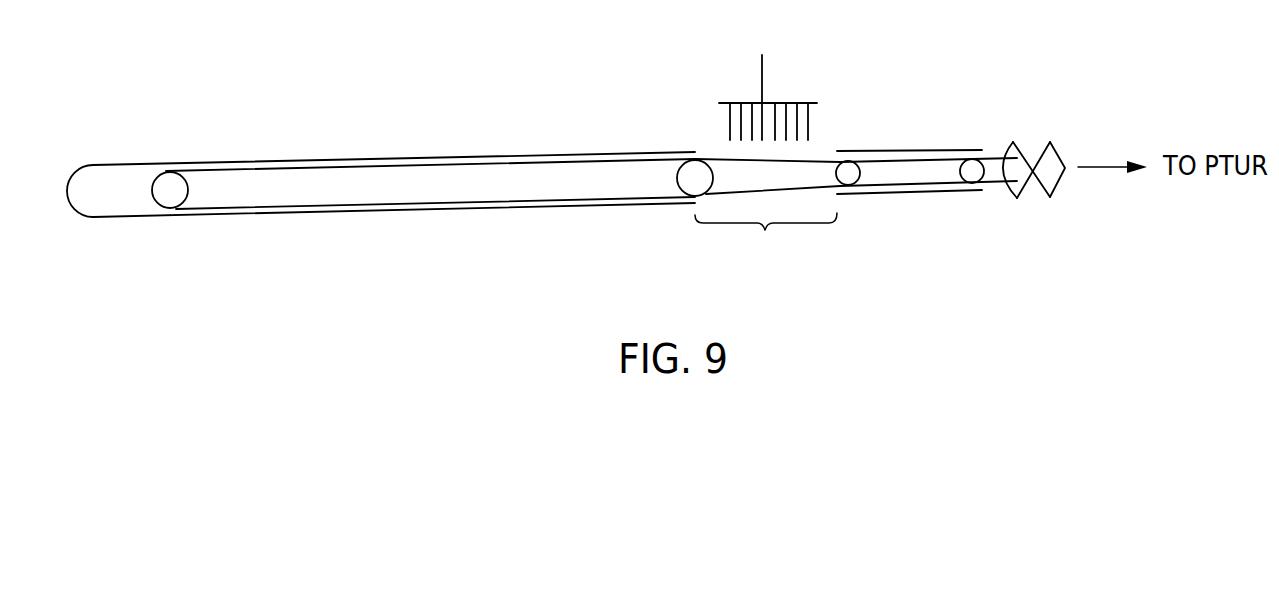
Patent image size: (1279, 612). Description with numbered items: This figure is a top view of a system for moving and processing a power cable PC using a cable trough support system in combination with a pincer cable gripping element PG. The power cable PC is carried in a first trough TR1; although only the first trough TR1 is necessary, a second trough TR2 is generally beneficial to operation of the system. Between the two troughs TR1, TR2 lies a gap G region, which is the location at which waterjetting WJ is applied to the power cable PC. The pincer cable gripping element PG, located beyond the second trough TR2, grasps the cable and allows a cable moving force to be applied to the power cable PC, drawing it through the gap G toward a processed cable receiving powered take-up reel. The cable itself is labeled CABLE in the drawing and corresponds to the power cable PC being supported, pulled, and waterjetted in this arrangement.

The first trough TR1 is at (127, 143).
The second trough TR2 is at (908, 135).
The waterjetting WJ is at (812, 81).
The power cable PC is at (425, 198).
The cable CABLE is at (247, 204).
The gap G is at (766, 240).
The pincer cable gripping element PG is at (1045, 220).